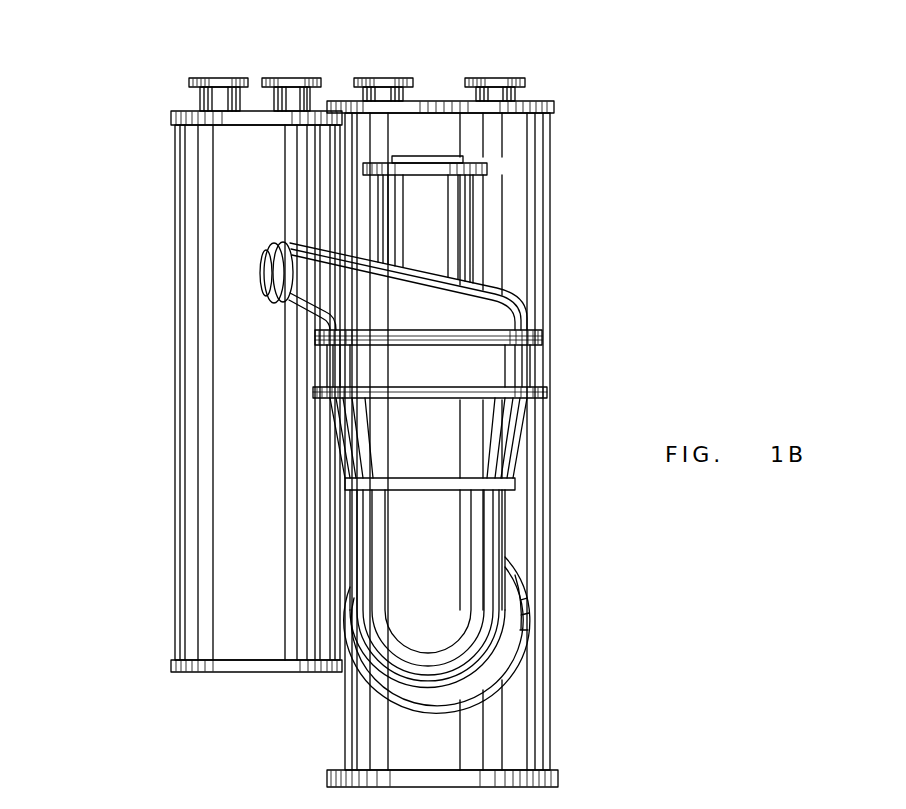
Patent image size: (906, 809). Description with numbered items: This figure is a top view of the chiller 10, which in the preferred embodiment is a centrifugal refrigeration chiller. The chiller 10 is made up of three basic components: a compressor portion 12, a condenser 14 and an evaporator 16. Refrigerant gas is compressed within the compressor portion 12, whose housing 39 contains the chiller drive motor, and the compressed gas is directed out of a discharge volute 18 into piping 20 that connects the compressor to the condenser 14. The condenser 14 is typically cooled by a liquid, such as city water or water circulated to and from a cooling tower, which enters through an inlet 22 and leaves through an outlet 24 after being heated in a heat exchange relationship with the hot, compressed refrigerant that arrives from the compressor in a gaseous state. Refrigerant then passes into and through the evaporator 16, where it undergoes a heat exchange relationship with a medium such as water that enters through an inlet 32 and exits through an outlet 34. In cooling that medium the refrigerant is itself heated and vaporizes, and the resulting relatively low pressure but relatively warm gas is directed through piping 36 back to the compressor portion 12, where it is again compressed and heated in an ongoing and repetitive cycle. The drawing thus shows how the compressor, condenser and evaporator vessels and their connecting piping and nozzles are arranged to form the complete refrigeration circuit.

The chiller 10 is at (160, 350).
The compressor portion 12 is at (568, 396).
The condenser 14 is at (268, 200).
The evaporator 16 is at (516, 150).
The discharge volute 18 is at (505, 297).
The piping 20 is at (265, 252).
The inlet 22 is at (292, 77).
The outlet 24 is at (212, 77).
The inlet 32 is at (518, 93).
The outlet 34 is at (406, 93).
The piping 36 is at (508, 625).
The housing 39 is at (436, 242).